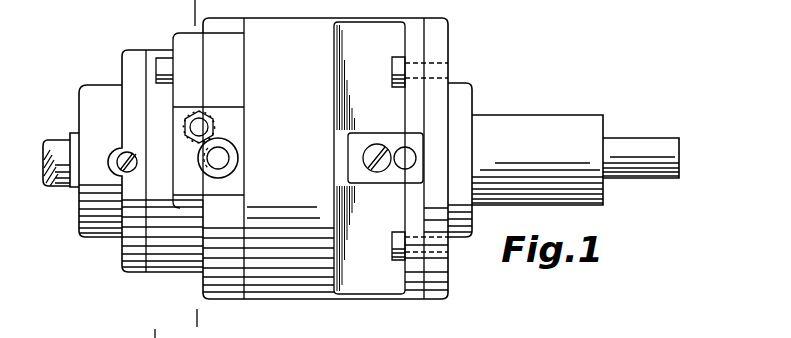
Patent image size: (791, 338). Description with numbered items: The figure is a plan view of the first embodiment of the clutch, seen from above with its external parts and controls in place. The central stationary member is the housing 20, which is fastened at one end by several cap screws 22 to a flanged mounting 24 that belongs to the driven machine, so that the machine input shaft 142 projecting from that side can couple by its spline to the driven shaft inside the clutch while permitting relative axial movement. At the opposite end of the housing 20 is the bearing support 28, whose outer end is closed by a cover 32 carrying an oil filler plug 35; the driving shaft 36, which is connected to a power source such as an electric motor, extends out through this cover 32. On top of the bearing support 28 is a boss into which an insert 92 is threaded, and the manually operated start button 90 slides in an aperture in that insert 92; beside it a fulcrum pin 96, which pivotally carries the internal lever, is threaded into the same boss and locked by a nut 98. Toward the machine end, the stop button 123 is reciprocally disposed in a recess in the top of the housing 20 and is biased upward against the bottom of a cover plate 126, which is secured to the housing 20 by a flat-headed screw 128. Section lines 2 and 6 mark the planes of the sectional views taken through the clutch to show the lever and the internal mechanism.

The section line 2- 2 is at (204, 321).
The section line 6- 6 is at (137, 333).
The housing 20 is at (287, 290).
The cap screws 22 is at (393, 247).
The flanged mounting 24 is at (472, 98).
The bearing support 28 is at (177, 258).
The cover 32 is at (94, 230).
The oil filler plug 35 is at (118, 152).
The driving shaft 36 is at (58, 180).
The start button 90 is at (221, 158).
The insert 92 is at (223, 143).
The fulcrum pin 96 is at (198, 113).
The nut 98 is at (212, 122).
The stop button 123 is at (405, 158).
The cover plate 126 is at (355, 164).
The flat-headed screw 128 is at (348, 147).
The machine input shaft 142 is at (645, 146).